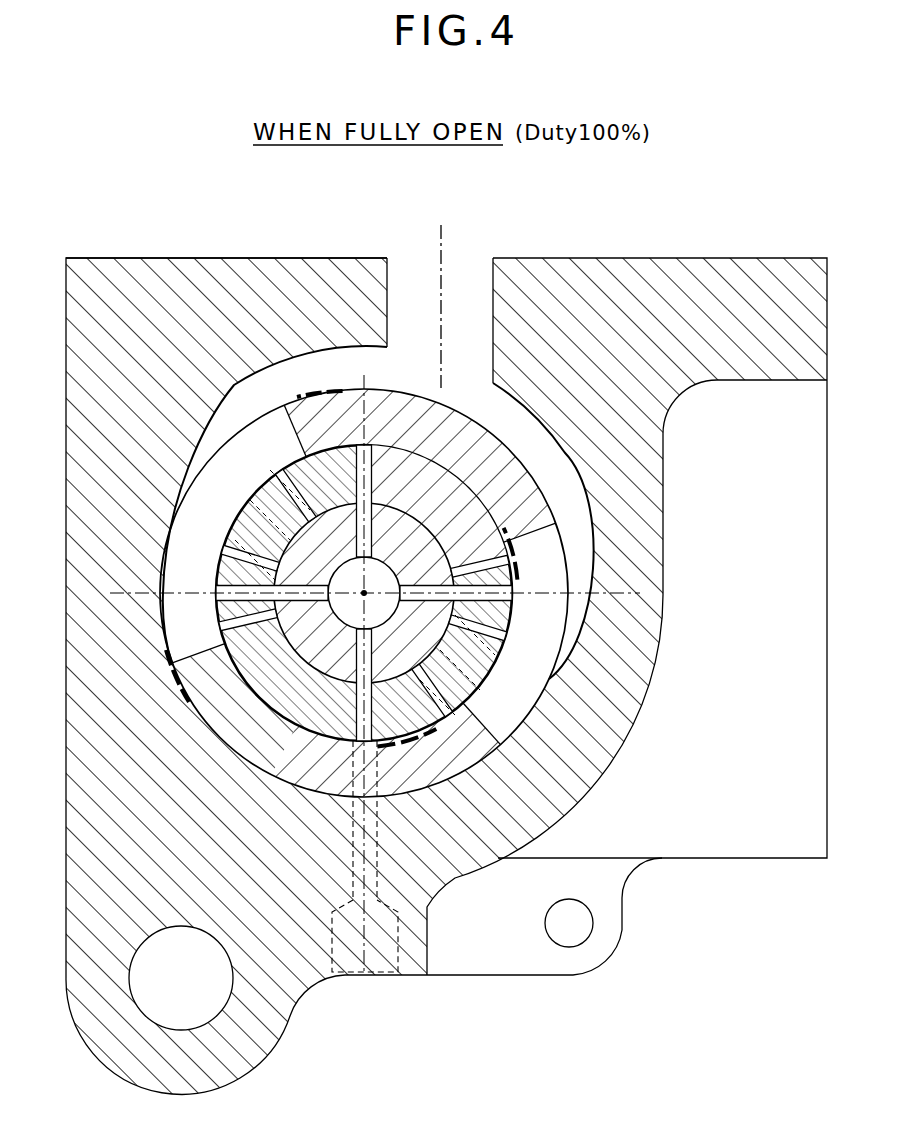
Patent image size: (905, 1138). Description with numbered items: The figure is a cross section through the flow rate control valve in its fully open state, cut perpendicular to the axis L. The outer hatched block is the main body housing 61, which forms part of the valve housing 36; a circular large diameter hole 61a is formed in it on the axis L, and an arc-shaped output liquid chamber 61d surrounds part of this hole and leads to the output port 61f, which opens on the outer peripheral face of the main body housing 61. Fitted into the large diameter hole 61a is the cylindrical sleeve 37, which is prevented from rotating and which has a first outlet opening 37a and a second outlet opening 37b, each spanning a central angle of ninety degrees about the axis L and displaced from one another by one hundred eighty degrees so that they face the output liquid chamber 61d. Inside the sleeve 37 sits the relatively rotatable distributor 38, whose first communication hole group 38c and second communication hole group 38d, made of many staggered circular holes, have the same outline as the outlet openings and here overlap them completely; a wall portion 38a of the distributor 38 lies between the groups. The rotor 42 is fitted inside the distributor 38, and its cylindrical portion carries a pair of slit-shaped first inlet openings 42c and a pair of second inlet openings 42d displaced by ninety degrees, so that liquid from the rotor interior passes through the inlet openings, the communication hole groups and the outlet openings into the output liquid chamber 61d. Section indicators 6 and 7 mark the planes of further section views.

The valve housing 36 is at (665, 228).
The sleeve 37 is at (364, 562).
The first outlet opening 37a is at (287, 404).
The second outlet opening 37b is at (440, 745).
The distributor 38 is at (357, 631).
The valve element wall portion 38a is at (253, 733).
The first communication hole group 38c is at (205, 572).
The second communication hole group 38d is at (497, 682).
The rotor 42 is at (372, 579).
The first inlet openings 42c is at (410, 586).
The second inlet openings 42d is at (366, 508).
The main body housing 61 is at (230, 255).
The large diameter hole 61a is at (177, 523).
The output liquid chamber 61d is at (357, 369).
The output port 61f is at (395, 285).
The axis L is at (364, 593).
The section line VI-VI 6 is at (472, 521).
The section line VII-VII 7 is at (325, 378).